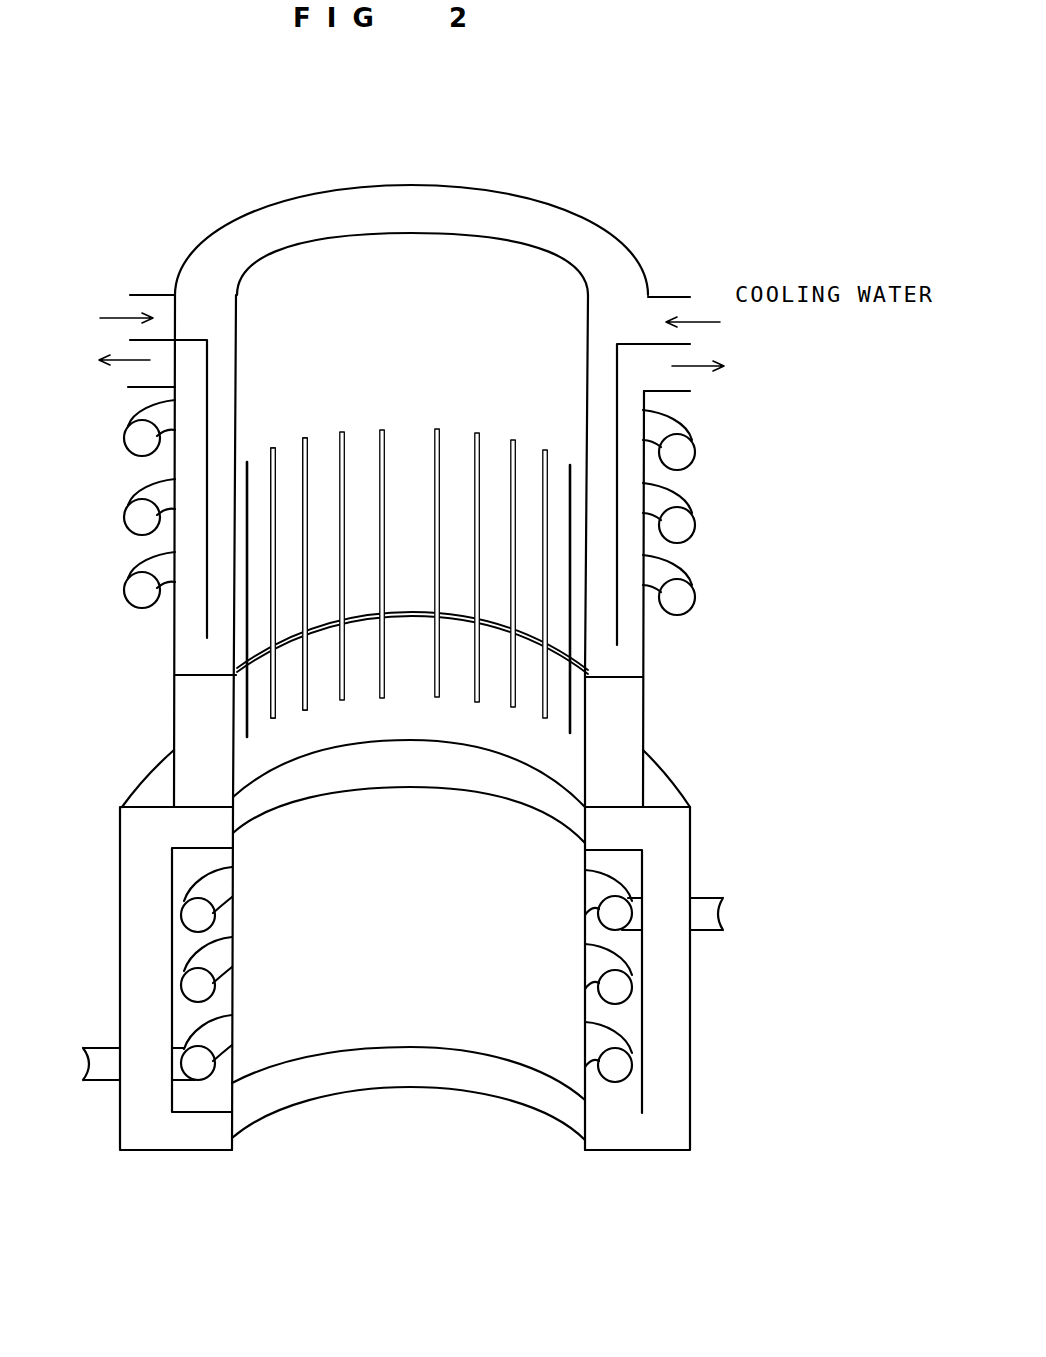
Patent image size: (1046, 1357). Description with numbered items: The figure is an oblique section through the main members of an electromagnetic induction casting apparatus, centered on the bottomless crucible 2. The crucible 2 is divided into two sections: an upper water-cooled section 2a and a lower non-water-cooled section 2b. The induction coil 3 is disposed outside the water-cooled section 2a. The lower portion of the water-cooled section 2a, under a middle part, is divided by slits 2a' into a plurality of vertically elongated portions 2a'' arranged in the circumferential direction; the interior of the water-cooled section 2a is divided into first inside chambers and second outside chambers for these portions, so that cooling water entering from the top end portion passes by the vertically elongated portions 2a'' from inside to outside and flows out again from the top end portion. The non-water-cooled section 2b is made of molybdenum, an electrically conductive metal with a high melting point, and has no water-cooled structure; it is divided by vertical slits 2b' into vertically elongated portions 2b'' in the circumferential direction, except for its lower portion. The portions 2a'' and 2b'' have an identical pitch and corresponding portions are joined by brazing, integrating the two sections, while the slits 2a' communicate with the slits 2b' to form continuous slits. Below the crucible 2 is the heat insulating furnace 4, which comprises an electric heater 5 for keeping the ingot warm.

The bottomless crucible 2 is at (798, 530).
The water-cooled section 2a is at (449, 470).
The slits 2a' is at (408, 431).
The vertically elongated portions 2a'' is at (262, 425).
The non-water-cooled section 2b is at (452, 940).
The vertical slits 2b' is at (507, 682).
The vertically elongated portions 2b'' is at (192, 705).
The induction coil 3 is at (123, 515).
The heat insulating furnace 4 is at (689, 962).
The electric heater 5 is at (627, 1050).